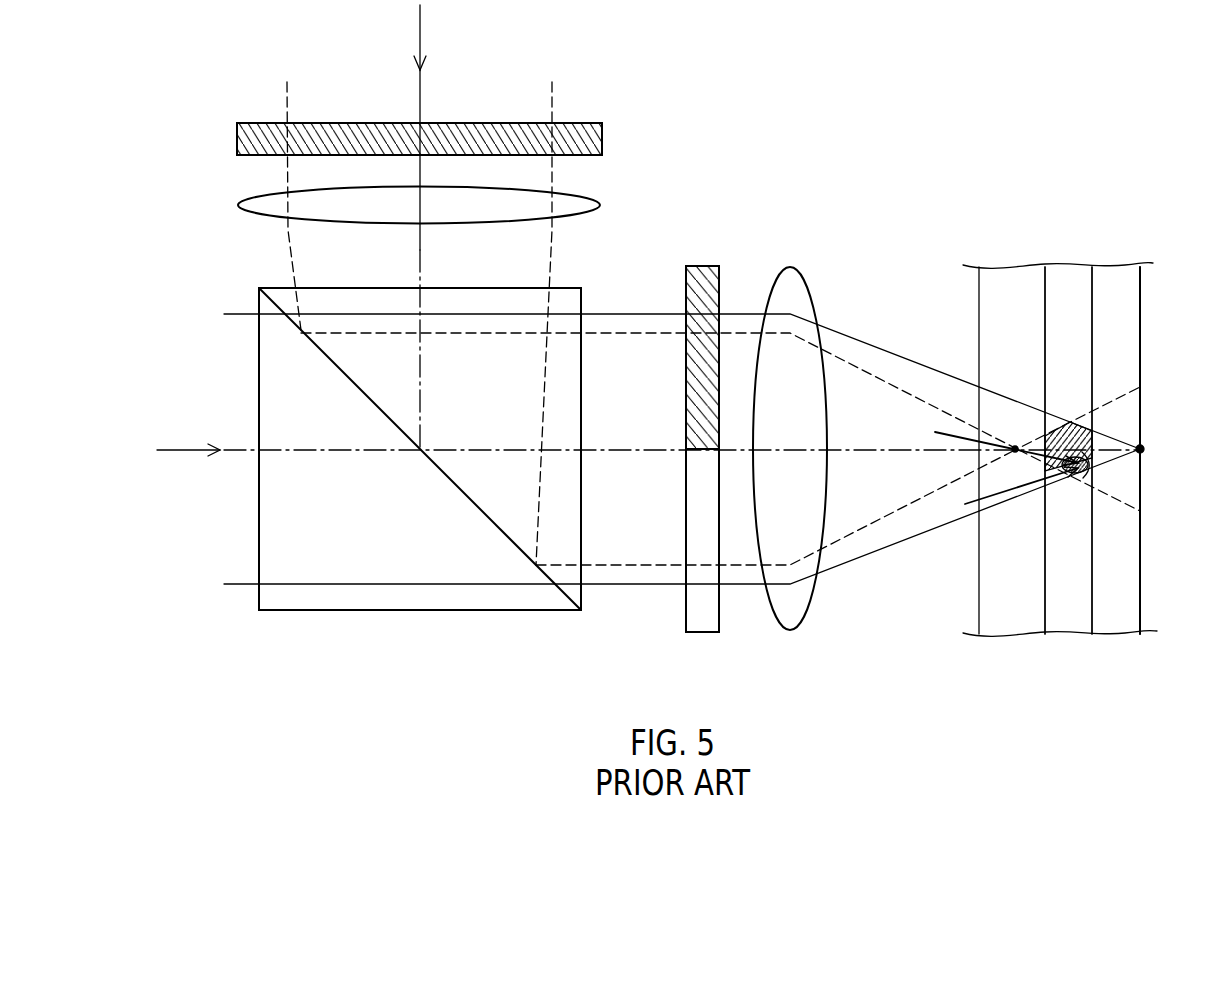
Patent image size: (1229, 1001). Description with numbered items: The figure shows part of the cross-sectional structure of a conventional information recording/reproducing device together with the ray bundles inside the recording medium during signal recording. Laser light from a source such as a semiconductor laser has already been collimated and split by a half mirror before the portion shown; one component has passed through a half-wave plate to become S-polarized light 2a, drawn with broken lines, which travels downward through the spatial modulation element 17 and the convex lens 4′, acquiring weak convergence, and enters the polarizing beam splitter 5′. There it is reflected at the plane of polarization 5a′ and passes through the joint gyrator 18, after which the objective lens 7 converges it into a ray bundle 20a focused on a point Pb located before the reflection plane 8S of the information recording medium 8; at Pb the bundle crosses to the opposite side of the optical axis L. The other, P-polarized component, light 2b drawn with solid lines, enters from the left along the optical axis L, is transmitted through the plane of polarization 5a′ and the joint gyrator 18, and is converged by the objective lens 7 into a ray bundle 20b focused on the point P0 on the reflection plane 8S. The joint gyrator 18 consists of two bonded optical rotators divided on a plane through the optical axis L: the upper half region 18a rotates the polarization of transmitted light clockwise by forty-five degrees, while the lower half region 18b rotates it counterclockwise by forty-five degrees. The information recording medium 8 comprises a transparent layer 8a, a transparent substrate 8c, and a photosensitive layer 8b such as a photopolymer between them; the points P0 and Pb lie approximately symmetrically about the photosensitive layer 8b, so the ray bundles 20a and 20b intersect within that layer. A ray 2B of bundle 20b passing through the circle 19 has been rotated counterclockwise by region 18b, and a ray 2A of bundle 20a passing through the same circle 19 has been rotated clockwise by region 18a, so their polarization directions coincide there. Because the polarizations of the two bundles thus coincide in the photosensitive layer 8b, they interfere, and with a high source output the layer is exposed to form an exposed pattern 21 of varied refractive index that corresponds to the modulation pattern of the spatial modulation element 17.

The S-polarized light 2a is at (421, 45).
The P-polarized light 2b is at (192, 452).
The spatial modulation element 17 is at (603, 137).
The convex lens 4′ is at (598, 204).
The polarizing beam splitter 5′ is at (422, 613).
The plane of polarization 5a′ is at (440, 471).
The optical axis L is at (640, 447).
The joint gyrator 18 is at (679, 625).
The upper half region 18a is at (702, 265).
The lower half region 18b is at (705, 633).
The objective lens 7 is at (800, 603).
The ray bundle 20a is at (857, 372).
The ray bundle 20b is at (913, 361).
The information recording medium 8 is at (1094, 480).
The transparent layer 8a is at (1113, 613).
The photosensitive layer 8b is at (1070, 613).
The transparent substrate 8c is at (1013, 613).
The reflection plane 8S is at (1142, 411).
The converging point P0 is at (1143, 453).
The converging point Pb is at (1008, 432).
The exposed pattern 21 is at (1068, 422).
The circle 19 is at (1088, 472).
The ray 2A is at (963, 438).
The ray 2B is at (1012, 492).